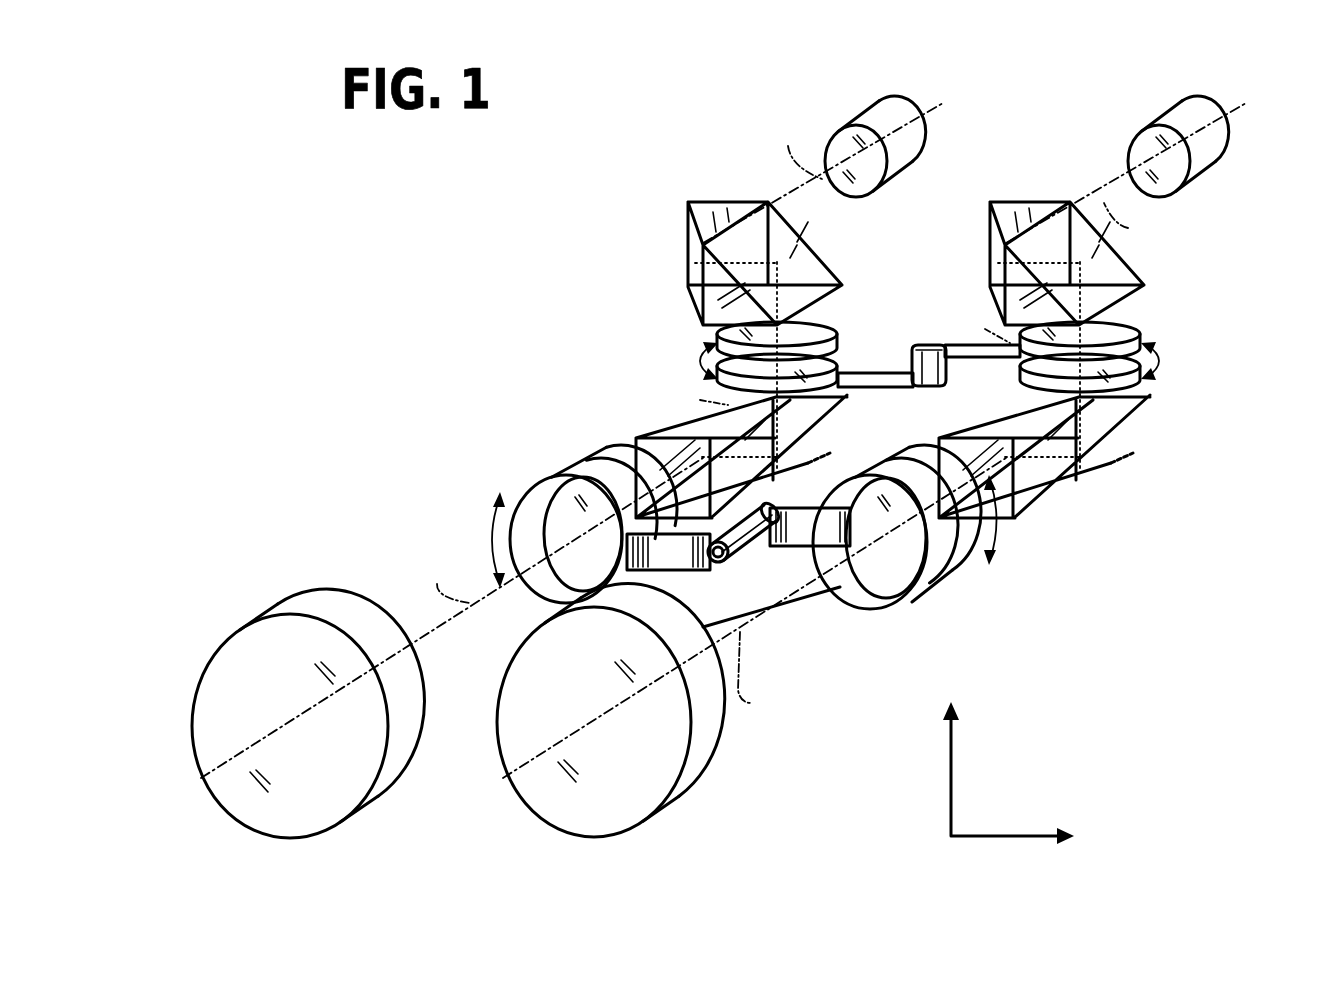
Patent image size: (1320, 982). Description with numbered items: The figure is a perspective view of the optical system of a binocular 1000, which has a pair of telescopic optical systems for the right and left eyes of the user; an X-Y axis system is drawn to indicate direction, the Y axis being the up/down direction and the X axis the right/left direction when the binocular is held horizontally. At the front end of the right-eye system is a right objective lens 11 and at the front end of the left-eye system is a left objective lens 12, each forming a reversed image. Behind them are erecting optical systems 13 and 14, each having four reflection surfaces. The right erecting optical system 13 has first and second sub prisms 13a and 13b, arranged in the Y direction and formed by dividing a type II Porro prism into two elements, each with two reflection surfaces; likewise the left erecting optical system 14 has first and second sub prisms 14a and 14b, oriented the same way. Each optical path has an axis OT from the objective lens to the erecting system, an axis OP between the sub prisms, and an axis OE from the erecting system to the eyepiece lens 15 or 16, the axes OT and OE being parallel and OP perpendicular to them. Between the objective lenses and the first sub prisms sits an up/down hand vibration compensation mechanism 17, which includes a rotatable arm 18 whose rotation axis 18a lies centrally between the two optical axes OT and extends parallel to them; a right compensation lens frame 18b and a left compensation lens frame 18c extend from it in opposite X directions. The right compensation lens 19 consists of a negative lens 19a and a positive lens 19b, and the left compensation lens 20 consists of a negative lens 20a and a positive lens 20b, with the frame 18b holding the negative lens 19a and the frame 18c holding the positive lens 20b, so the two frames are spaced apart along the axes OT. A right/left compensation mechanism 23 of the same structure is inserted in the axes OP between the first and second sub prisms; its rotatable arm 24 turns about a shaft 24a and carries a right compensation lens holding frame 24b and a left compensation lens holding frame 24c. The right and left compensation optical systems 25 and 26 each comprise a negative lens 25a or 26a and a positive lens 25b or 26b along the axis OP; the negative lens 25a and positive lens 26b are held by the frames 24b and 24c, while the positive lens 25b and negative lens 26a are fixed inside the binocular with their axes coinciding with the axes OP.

The binocular 1000 is at (412, 357).
The right objective lens 11 is at (243, 788).
The left objective lens 12 is at (546, 788).
The erecting optical system 13 is at (596, 255).
The first sub prism 13a is at (637, 437).
The second sub prism 13b is at (688, 286).
The erecting optical system 14 is at (1254, 280).
The first sub prism 14a is at (1092, 415).
The second sub prism 14b is at (1140, 298).
The eyepiece lens 15 is at (873, 120).
The eyepiece lens 16 is at (1178, 120).
The up/down hand vibration compensation mechanism 17 is at (808, 672).
The rotatable arm 18 is at (745, 601).
The rotation axis 18a is at (720, 560).
The right compensation lens frame 18b is at (684, 560).
The left compensation lens frame 18c is at (813, 510).
The right compensation lens 19 is at (510, 367).
The negative lens 19a is at (572, 472).
The positive lens 19b is at (592, 457).
The left compensation lens 20 is at (1062, 578).
The negative lens 20a is at (916, 590).
The positive lens 20b is at (952, 556).
The right/left compensation mechanism 23 is at (888, 353).
The rotatable arm 24 is at (886, 425).
The shaft 24a is at (928, 386).
The right compensation lens holding frame 24b is at (852, 388).
The left compensation lens holding frame 24c is at (990, 357).
The right compensation optical system 25 is at (897, 213).
The negative lens 25a is at (805, 364).
The positive lens 25b is at (800, 331).
The left compensation optical system 26 is at (1190, 438).
The negative lens 26a is at (1062, 440).
The positive lens 26b is at (1100, 398).